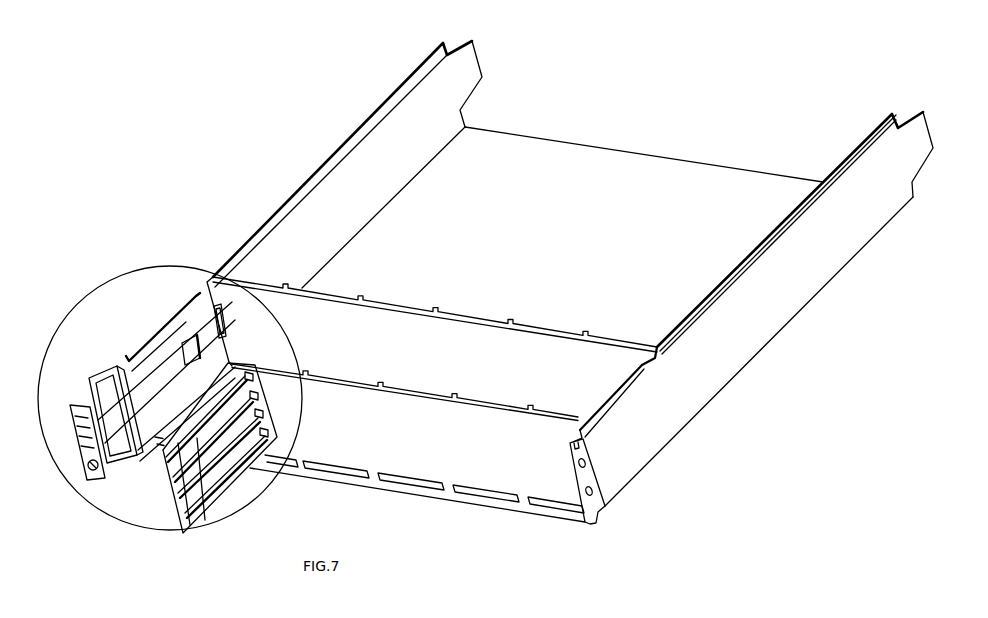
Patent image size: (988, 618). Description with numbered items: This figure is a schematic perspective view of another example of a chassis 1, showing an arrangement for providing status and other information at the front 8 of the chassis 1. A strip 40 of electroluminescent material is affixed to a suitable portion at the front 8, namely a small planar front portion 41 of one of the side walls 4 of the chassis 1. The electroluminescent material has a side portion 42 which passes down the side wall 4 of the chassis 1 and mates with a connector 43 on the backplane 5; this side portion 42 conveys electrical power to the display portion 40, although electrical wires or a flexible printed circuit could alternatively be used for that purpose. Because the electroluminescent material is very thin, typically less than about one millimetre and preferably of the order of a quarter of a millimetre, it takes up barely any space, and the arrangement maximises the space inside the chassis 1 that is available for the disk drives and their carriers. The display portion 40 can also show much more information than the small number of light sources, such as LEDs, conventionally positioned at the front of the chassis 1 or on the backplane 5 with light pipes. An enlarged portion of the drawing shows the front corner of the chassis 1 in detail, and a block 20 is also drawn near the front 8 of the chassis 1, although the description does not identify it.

The chassis 1 is at (676, 436).
The side wall 4 is at (158, 337).
The backplane 5 is at (398, 303).
The front 8 is at (318, 503).
The connector block 20 is at (190, 530).
The strip of electroluminescent material 40 is at (80, 440).
The planar front portion 41 is at (95, 370).
The side portion 42 is at (157, 377).
The connector 43 is at (222, 317).